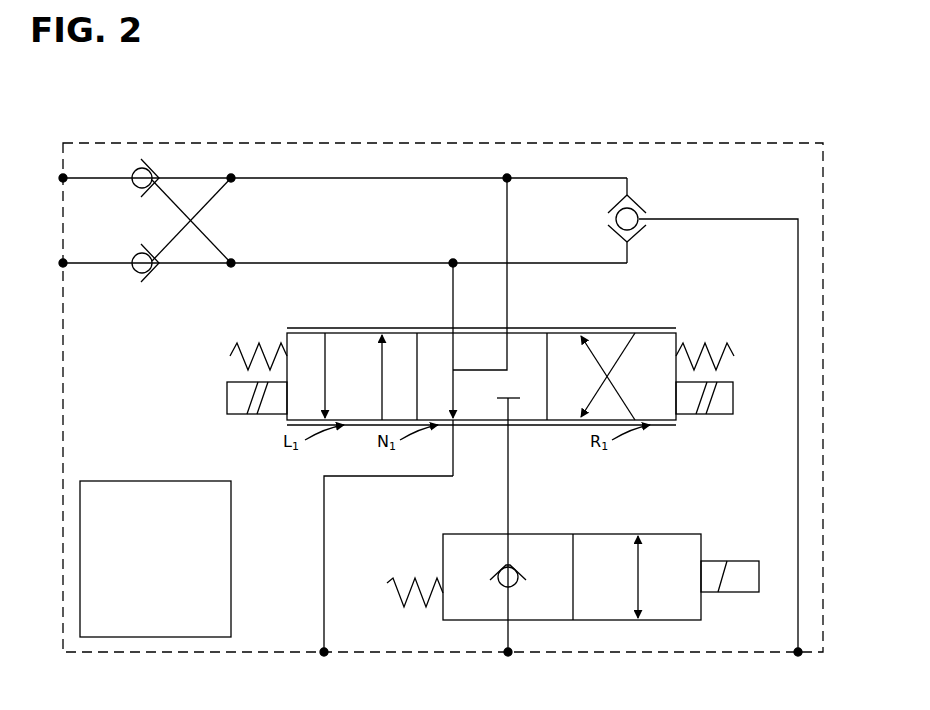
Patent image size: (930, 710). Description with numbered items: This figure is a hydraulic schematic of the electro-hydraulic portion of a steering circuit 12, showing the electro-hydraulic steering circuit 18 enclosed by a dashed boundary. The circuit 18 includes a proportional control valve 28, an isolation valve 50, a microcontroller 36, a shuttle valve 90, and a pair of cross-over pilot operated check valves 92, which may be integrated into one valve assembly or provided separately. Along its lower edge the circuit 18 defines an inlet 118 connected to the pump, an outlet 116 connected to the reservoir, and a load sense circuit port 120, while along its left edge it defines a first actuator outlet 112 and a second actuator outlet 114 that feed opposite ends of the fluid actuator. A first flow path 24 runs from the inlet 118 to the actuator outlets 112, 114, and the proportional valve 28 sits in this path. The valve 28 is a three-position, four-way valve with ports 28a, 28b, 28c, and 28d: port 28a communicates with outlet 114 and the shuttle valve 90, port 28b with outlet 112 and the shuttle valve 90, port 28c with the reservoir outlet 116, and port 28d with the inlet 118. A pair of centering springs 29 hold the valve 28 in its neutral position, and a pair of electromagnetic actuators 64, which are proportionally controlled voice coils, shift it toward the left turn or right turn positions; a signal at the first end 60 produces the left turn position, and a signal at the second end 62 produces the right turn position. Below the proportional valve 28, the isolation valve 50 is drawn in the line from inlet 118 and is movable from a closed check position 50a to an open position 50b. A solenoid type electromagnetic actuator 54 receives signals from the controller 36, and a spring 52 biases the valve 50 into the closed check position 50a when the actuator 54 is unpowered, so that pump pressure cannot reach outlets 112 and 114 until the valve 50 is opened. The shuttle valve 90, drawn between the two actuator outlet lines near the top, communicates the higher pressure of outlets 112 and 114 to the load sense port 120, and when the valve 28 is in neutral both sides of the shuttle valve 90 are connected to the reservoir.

The steering circuit 12 is at (424, 126).
The electro-hydraulic steering circuit 18 is at (660, 143).
The first flow path 24 is at (515, 467).
The proportional control valve 28 is at (402, 333).
The port 28a is at (452, 328).
The port 28b is at (510, 330).
The port 28c is at (454, 424).
The port 28d is at (511, 424).
The centering springs 29 is at (232, 352).
The microcontroller 36 is at (155, 559).
The isolation valve 50 is at (558, 558).
The closed check position 50a is at (477, 552).
The open position 50b is at (589, 557).
The spring 52 is at (390, 598).
The solenoid type electromagnetic actuator 54 is at (752, 593).
The first end 60 is at (287, 335).
The second end 62 is at (677, 335).
The electromagnetic actuators 64 is at (271, 414).
The shuttle valve 90 is at (640, 206).
The cross-over pilot operated check valves 92 is at (133, 188).
The first actuator outlet 112 is at (322, 179).
The second actuator outlet 114 is at (322, 264).
The outlet 116 is at (380, 580).
The inlet 118 is at (510, 652).
The load sense circuit port 120 is at (725, 451).